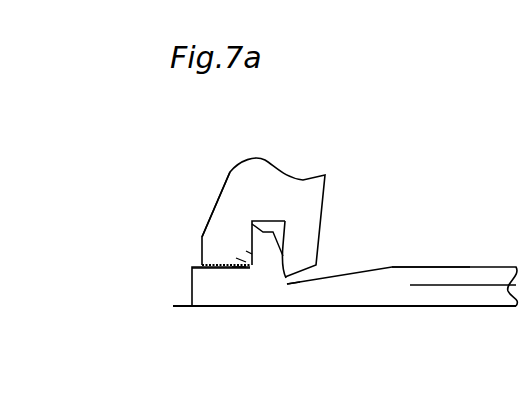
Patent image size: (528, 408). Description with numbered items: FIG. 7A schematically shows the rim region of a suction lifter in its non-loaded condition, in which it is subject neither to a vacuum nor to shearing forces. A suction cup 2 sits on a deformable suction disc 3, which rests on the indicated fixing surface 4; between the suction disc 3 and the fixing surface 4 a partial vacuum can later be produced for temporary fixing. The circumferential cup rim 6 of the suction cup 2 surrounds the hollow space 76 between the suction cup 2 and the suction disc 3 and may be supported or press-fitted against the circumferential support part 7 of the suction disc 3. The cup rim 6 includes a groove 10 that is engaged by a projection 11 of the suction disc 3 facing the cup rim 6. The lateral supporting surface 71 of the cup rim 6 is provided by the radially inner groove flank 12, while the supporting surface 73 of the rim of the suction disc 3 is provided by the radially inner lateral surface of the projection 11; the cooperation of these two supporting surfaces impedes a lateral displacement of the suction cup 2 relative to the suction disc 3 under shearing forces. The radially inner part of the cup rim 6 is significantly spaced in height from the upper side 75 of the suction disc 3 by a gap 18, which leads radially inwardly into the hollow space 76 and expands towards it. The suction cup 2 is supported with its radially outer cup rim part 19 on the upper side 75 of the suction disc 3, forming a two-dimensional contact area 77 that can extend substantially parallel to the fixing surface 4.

The suction cup 2 is at (277, 173).
The suction disc 3 is at (375, 298).
The fixing surface 4 is at (305, 305).
The cup rim 6 is at (238, 264).
The circumferential support part 7 is at (230, 271).
The groove 10 is at (283, 225).
The projection 11 is at (252, 221).
The radially inner groove flank 12 is at (288, 237).
The gap 18 is at (287, 284).
The radially outer cup rim part 19 is at (245, 262).
The lateral supporting surface of the cup rim 71 is at (287, 254).
The supporting surface of the suction disc rim 73 is at (250, 253).
The upper side of the suction disc 75 is at (427, 264).
The hollow space 76 is at (420, 178).
The contact area 77 is at (238, 271).